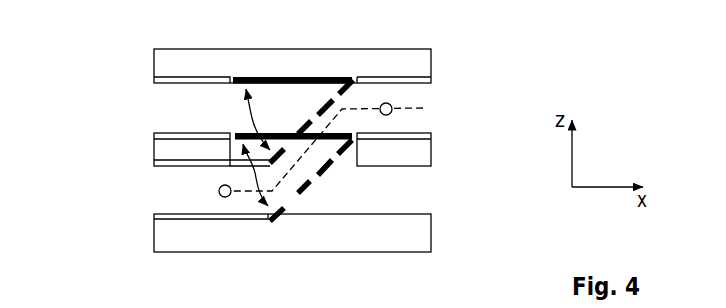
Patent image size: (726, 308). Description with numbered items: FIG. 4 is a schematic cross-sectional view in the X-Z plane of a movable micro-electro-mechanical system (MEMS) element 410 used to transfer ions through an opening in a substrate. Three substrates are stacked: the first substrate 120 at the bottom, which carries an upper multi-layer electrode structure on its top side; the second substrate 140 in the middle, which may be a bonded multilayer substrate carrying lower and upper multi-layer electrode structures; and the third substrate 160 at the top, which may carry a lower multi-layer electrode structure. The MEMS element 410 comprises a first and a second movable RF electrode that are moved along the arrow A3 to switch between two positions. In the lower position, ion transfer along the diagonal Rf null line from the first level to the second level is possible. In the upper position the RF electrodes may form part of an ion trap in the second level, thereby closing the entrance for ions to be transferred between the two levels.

The third substrate 160 is at (420, 62).
The movable micro-electro-mechanical system (MEMS) element 410 is at (266, 72).
The second substrate 140 is at (422, 150).
The first substrate 120 is at (425, 233).
The RF null line Rf null is at (424, 107).
The arrow A3 is at (243, 94).